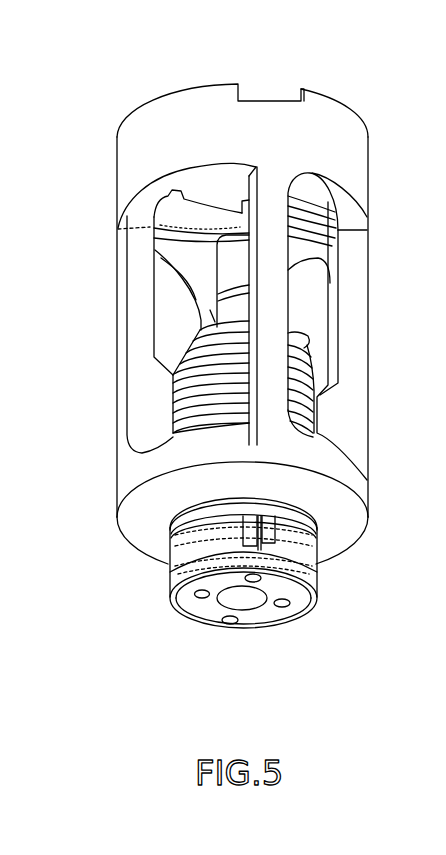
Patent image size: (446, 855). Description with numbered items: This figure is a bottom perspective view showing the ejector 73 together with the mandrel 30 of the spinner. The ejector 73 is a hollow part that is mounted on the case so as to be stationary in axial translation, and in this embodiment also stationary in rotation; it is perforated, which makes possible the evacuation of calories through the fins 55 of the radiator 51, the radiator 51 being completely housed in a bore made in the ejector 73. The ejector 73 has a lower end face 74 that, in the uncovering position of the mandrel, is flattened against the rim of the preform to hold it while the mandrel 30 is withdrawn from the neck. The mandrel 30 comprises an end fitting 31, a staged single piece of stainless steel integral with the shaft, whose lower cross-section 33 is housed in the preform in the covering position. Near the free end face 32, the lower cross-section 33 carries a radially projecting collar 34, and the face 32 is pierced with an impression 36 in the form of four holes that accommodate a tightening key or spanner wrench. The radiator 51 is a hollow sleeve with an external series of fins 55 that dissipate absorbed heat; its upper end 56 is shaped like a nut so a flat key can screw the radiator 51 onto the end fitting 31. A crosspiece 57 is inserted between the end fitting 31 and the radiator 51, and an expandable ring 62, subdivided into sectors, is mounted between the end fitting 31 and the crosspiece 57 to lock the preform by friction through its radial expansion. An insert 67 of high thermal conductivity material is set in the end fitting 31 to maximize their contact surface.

The mandrel 30 is at (246, 570).
The end fitting 31 is at (283, 610).
The face of free end 32 is at (258, 622).
The lower cross-section 33 is at (298, 618).
The collar 34 is at (309, 596).
The impression 36 is at (226, 622).
The radiator 51 is at (313, 419).
The fins 55 is at (181, 408).
The upper end of the radiator 56 is at (198, 363).
The crosspiece 57 is at (317, 515).
The expandable ring 62 is at (283, 528).
The insert 67 is at (248, 603).
The ejector 73 is at (121, 493).
The lower end face 74 is at (139, 530).